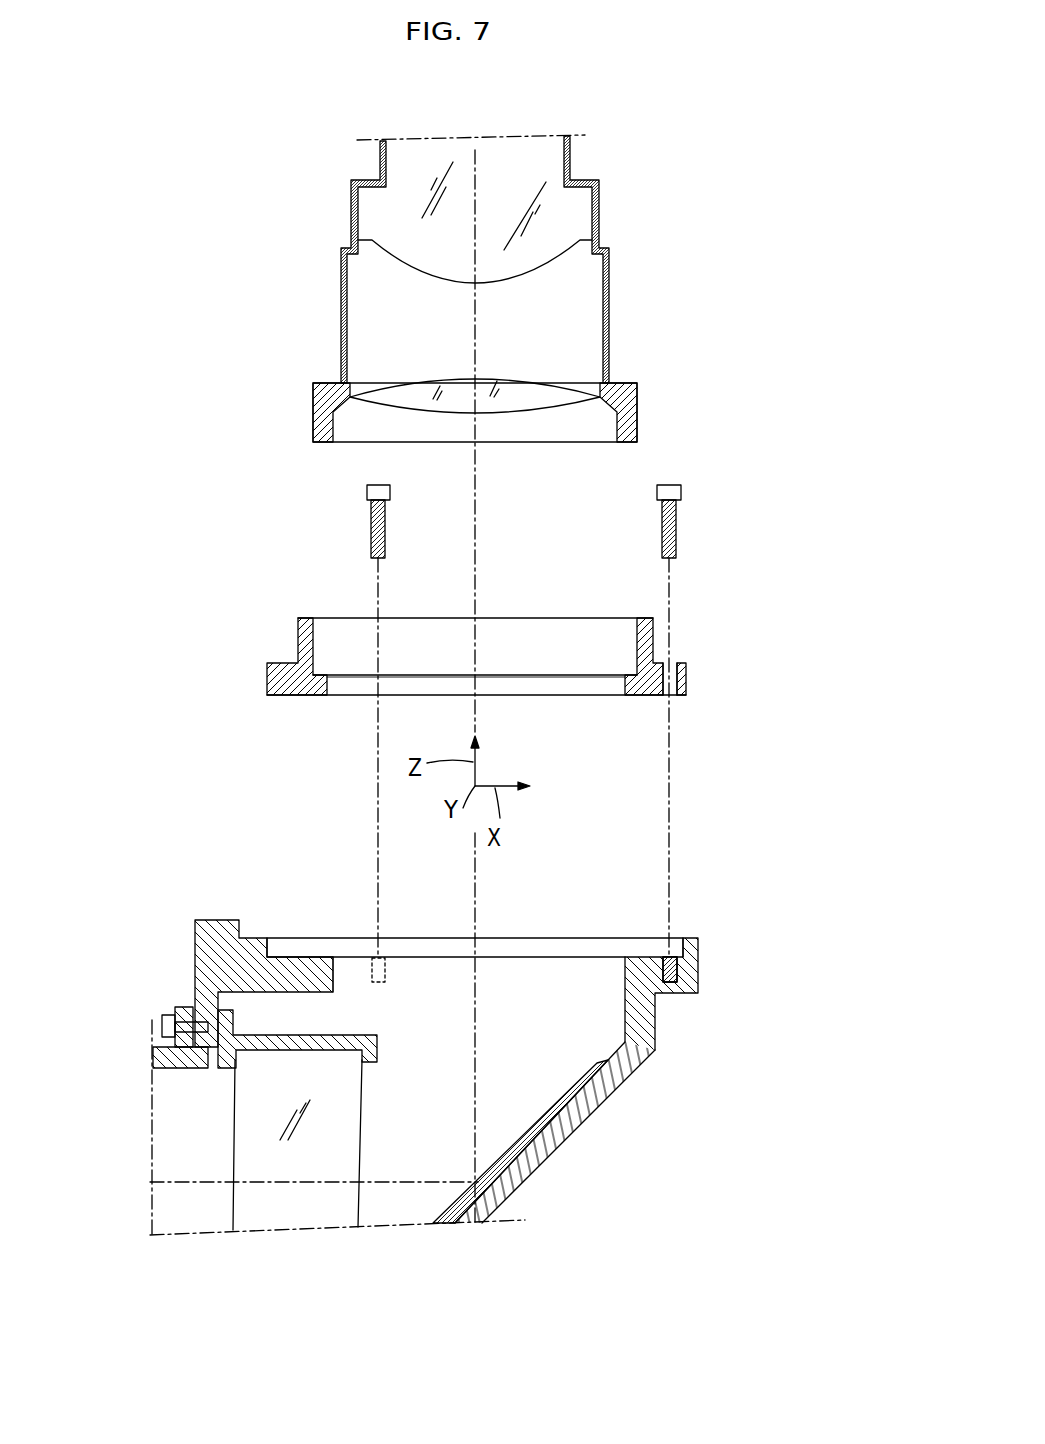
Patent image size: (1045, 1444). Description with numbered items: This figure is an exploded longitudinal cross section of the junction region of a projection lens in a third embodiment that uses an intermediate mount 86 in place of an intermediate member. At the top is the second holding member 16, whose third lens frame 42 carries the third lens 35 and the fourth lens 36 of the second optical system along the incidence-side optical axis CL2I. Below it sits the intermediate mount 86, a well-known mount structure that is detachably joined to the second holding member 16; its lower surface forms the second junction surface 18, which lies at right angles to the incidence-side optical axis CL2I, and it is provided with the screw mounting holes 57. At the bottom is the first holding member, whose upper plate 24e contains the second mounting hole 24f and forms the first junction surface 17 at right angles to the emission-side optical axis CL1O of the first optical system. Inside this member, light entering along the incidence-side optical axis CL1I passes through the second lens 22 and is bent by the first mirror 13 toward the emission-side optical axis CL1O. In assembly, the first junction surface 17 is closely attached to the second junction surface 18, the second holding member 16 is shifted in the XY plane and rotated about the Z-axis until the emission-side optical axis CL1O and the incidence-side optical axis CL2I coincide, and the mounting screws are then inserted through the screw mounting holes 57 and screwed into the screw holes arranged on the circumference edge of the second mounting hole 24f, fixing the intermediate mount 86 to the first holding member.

The fourth lens 36 is at (541, 160).
The second holding member 16 is at (604, 221).
The third lens frame 42 is at (612, 340).
The third lens 35 is at (498, 380).
The screw mounting hole 57 is at (672, 661).
The intermediate mount 86 is at (686, 680).
The second junction surface 18 is at (627, 696).
The upper plate 24e is at (320, 957).
The second mounting hole 24f is at (333, 975).
The first junction surface 17 is at (650, 958).
The first mirror 13 is at (615, 1063).
The second lens 22 is at (300, 1198).
The incidence-side optical axis CL2I is at (480, 543).
The emission-side optical axis CL1O is at (477, 876).
The incidence-side optical axis of the first optical system CL1I is at (396, 1182).